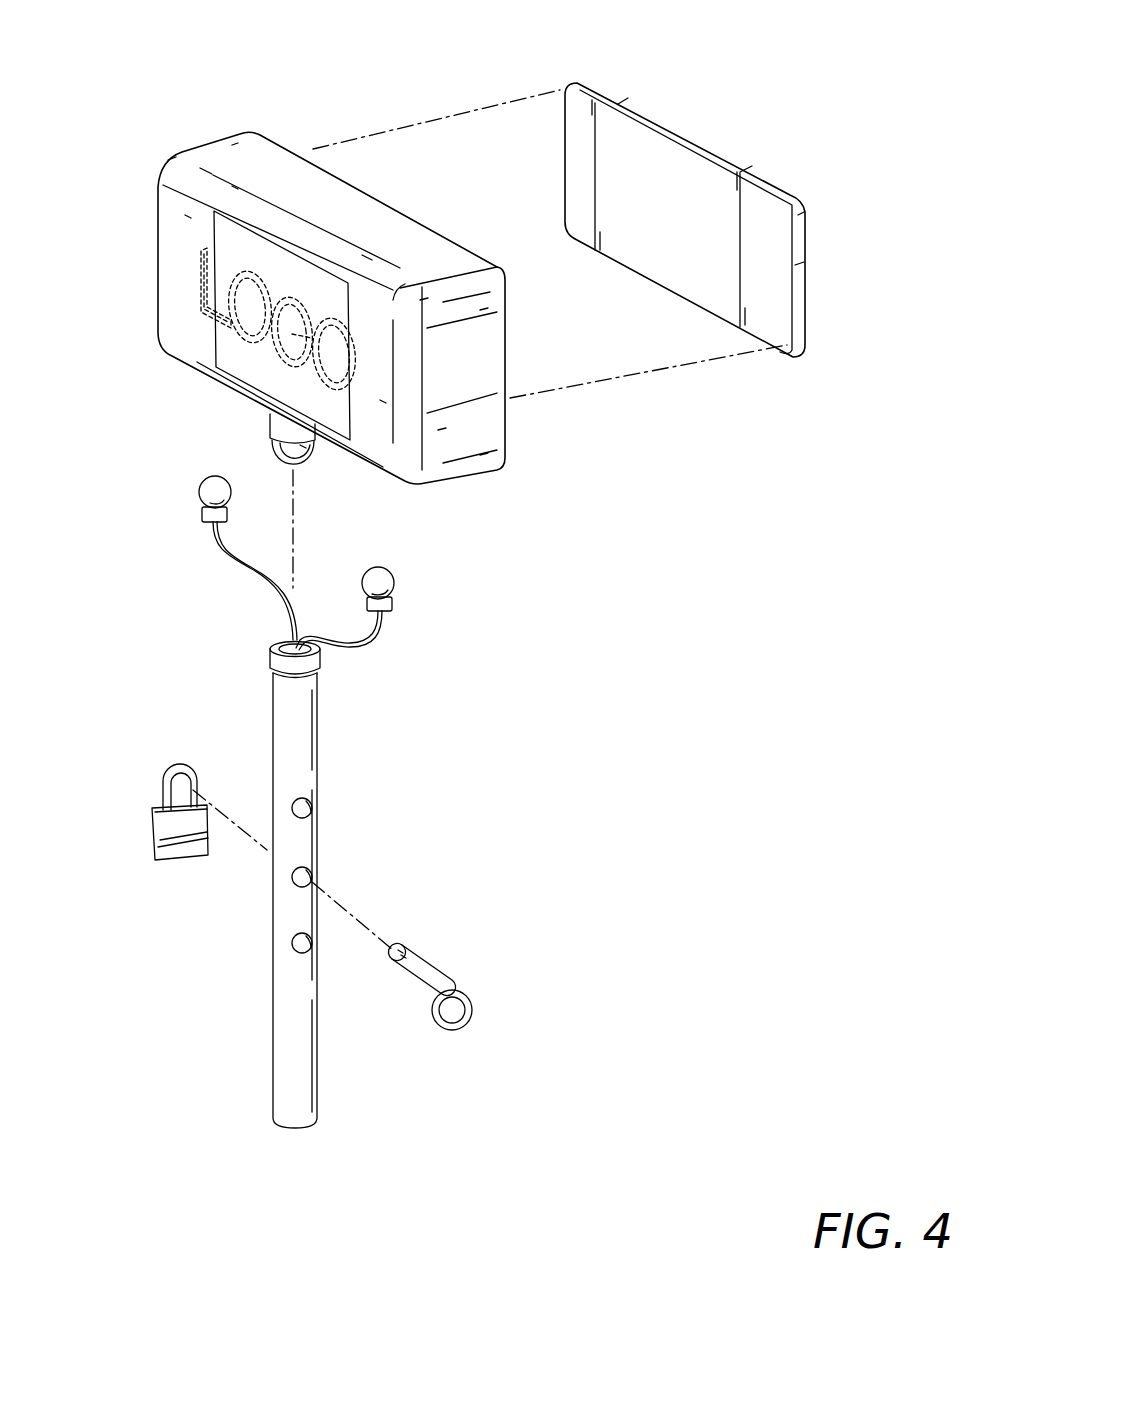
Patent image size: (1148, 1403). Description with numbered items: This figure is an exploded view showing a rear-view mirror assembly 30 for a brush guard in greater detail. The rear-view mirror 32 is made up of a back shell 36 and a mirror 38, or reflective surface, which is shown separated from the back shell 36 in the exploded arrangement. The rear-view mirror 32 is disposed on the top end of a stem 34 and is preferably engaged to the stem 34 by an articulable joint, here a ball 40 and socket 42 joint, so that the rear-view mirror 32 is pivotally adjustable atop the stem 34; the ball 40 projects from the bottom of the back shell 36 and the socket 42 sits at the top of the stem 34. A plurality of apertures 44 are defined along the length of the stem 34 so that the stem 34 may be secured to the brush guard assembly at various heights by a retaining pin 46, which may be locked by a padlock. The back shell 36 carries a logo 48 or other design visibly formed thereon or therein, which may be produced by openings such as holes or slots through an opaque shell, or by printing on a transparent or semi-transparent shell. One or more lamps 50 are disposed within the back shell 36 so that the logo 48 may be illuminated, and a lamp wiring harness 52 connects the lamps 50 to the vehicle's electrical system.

The rear-view mirror assembly 30 is at (757, 628).
The rear-view mirror 32 is at (416, 74).
The stem 34 is at (272, 1013).
The back shell 36 is at (274, 138).
The mirror 38 is at (694, 137).
The ball 40 is at (268, 412).
The socket 42 is at (268, 657).
The apertures 44 is at (313, 942).
The retaining pin 46 is at (434, 963).
The logo 48 is at (203, 290).
The lamps 50 is at (199, 482).
The lamp wiring harness 52 is at (230, 563).